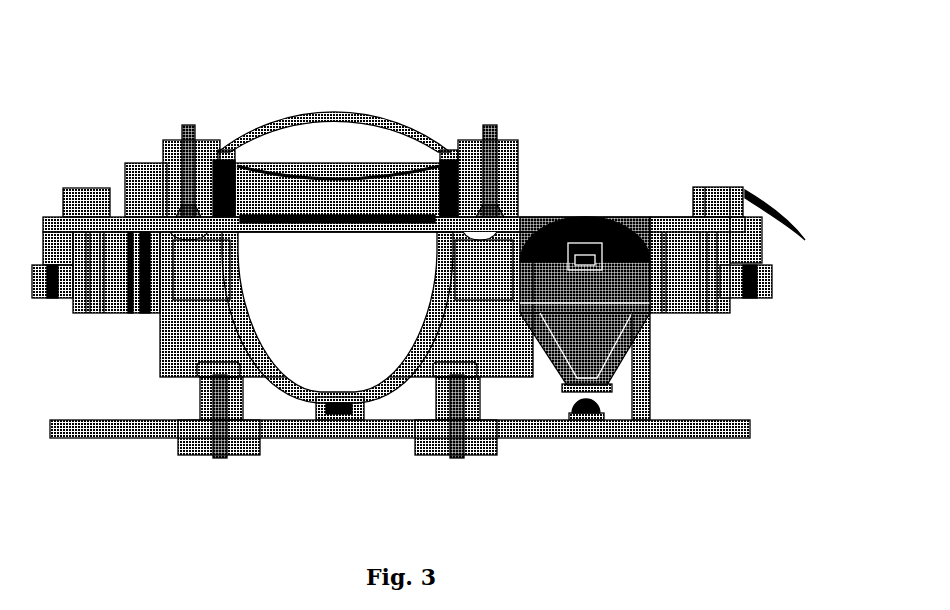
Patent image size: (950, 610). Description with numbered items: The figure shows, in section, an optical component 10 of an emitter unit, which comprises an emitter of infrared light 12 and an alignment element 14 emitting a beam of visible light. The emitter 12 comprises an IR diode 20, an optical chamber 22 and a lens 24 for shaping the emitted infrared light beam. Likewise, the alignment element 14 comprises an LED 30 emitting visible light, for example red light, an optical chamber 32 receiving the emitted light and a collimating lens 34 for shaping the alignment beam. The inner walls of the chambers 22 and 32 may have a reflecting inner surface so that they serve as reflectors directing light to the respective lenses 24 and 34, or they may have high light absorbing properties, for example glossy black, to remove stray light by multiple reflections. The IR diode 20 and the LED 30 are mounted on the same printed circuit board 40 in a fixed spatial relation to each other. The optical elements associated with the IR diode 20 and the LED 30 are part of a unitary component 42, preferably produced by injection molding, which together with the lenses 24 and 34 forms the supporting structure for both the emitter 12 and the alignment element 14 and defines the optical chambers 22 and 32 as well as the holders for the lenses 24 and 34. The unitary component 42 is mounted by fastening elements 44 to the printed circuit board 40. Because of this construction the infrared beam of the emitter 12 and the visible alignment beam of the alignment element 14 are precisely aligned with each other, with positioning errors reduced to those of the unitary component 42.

The optical component 10 is at (518, 66).
The emitter of infrared light 12 is at (318, 92).
The alignment element 14 is at (613, 188).
The IR diode 20 is at (333, 422).
The optical chamber 22 is at (308, 357).
The lens 24 is at (370, 137).
The LED 30 is at (603, 440).
The optical chamber 32 is at (648, 358).
The collimating lens 34 is at (585, 245).
The printed circuit board 40 is at (752, 428).
The unitary component 42 is at (756, 245).
The fastening elements 44 is at (210, 468).